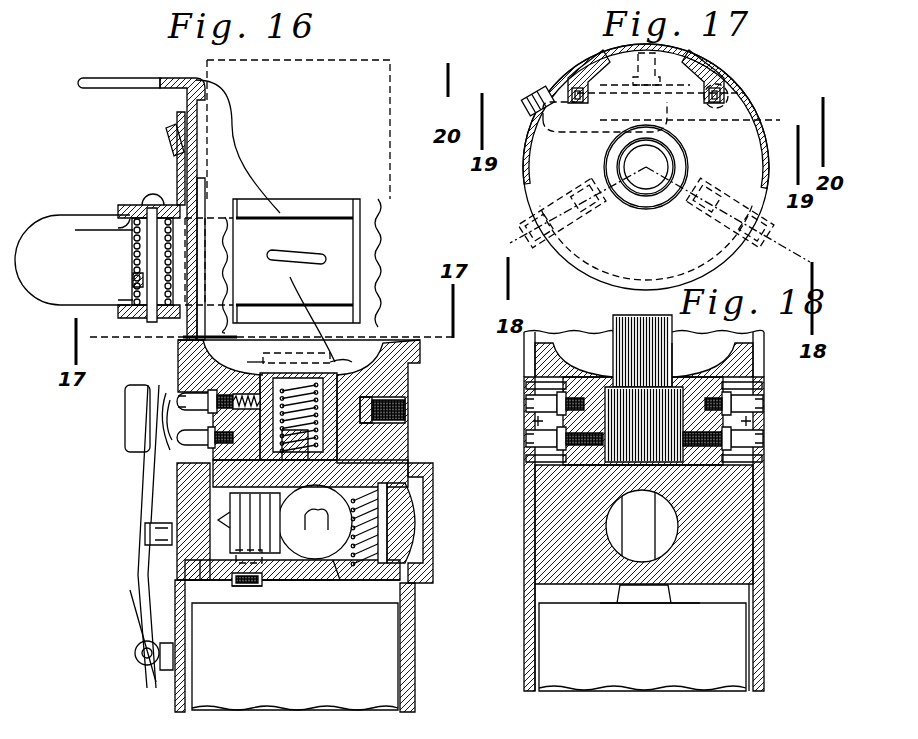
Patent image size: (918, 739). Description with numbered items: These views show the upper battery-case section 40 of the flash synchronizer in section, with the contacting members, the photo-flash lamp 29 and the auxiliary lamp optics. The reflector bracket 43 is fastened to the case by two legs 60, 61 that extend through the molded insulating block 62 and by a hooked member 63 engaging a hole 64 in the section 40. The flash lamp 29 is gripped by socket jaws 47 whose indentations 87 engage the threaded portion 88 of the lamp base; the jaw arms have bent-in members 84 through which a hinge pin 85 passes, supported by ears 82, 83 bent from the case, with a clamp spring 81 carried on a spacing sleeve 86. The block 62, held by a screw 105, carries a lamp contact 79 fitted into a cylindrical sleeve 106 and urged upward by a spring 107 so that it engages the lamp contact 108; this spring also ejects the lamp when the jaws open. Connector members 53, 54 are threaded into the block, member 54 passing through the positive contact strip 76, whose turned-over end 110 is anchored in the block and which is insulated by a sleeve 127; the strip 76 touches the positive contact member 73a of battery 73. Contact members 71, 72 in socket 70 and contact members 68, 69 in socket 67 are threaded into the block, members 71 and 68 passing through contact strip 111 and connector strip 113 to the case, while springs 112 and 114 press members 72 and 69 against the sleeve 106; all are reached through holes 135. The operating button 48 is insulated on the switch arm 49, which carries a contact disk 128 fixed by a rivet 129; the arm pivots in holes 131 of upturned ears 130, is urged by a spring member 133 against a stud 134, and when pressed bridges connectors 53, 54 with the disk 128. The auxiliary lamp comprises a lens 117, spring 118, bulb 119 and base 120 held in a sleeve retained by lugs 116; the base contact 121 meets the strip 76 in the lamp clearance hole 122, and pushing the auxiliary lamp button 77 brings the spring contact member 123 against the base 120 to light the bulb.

In FIG. 16, the flash lamp 29 is at (324, 76).
In FIG. 16, the upper battery-case section 40 is at (412, 679).
In FIG. 17, the upper battery-case section 40 is at (748, 90).
In FIG. 18, the upper battery-case section 40 is at (765, 634).
In FIG. 16, the reflector bracket 43 is at (128, 78).
In FIG. 16, the socket jaws 47 is at (345, 266).
In FIG. 16, the operating button 48 is at (125, 400).
In FIG. 16, the switch arm 49 is at (141, 508).
In FIG. 16, the connector member 53 is at (198, 400).
In FIG. 17, the connector member 53 is at (690, 56).
In FIG. 16, the connector member 54 is at (190, 447).
In FIG. 16, the bracket leg 60 is at (208, 204).
In FIG. 17, the bracket leg 60 is at (726, 78).
In FIG. 17, the bracket leg 61 is at (600, 63).
In FIG. 16, the insulating block 62 is at (422, 350).
In FIG. 17, the insulating block 62 is at (598, 257).
In FIG. 18, the insulating block 62 is at (540, 550).
In FIG. 16, the hooked member 63 is at (167, 132).
In FIG. 16, the hole 64 is at (178, 160).
In FIG. 18, the socket 67 is at (752, 422).
In FIG. 17, the contact member 68 is at (762, 222).
In FIG. 18, the contact member 68 is at (765, 405).
In FIG. 18, the contact member 69 is at (765, 443).
In FIG. 18, the socket 70 is at (533, 422).
In FIG. 17, the contact member 71 is at (532, 220).
In FIG. 18, the contact member 71 is at (526, 403).
In FIG. 18, the contact member 72 is at (526, 440).
In FIG. 16, the battery 73 is at (387, 650).
In FIG. 18, the battery 73 is at (728, 656).
In FIG. 16, the positive contact member 73a is at (300, 582).
In FIG. 18, the positive contact member 73a is at (655, 604).
In FIG. 16, the positive contact strip 76 is at (225, 588).
In FIG. 18, the positive contact strip 76 is at (650, 545).
In FIG. 17, the auxiliary lamp button 77 is at (530, 111).
In FIG. 16, the lamp contact 79 is at (343, 357).
In FIG. 17, the lamp contact 79 is at (672, 162).
In FIG. 18, the lamp contact 79 is at (628, 322).
In FIG. 16, the clamp spring 81 is at (132, 247).
In FIG. 16, the ear 82 is at (132, 206).
In FIG. 16, the ear 83 is at (120, 313).
In FIG. 16, the bent-in member 84 is at (118, 222).
In FIG. 16, the hinge pin 85 is at (153, 203).
In FIG. 16, the spacing sleeve 86 is at (133, 283).
In FIG. 16, the indentation 87 is at (298, 251).
In FIG. 16, the threaded portion of lamp base 88 is at (382, 240).
In FIG. 16, the screw 105 is at (410, 406).
In FIG. 16, the cylindrical sleeve 106 is at (249, 362).
In FIG. 17, the cylindrical sleeve 106 is at (648, 200).
In FIG. 18, the cylindrical sleeve 106 is at (674, 375).
In FIG. 16, the spring 107 is at (292, 442).
In FIG. 16, the lamp contact 108 is at (298, 352).
In FIG. 16, the turned-over end 110 is at (310, 578).
In FIG. 18, the contact strip 111 is at (528, 385).
In FIG. 18, the spring 112 is at (609, 437).
In FIG. 18, the connector strip 113 is at (761, 385).
In FIG. 18, the coiled spring 114 is at (700, 438).
In FIG. 16, the lug 116 is at (412, 482).
In FIG. 16, the lens 117 is at (418, 540).
In FIG. 16, the spring 118 is at (388, 516).
In FIG. 16, the bulb 119 is at (366, 565).
In FIG. 16, the lamp base 120 is at (268, 540).
In FIG. 16, the base contact 121 is at (200, 585).
In FIG. 18, the lamp clearance hole 122 is at (614, 550).
In FIG. 16, the spring contact member 123 is at (245, 588).
In FIG. 17, the spring contact member 123 is at (593, 128).
In FIG. 16, the insulating sleeve 127 is at (262, 590).
In FIG. 16, the contact disk 128 is at (165, 448).
In FIG. 16, the rivet 129 is at (169, 433).
In FIG. 16, the upturned ear 130 is at (163, 672).
In FIG. 16, the hole 131 is at (135, 653).
In FIG. 16, the spring member 133 is at (136, 589).
In FIG. 16, the stud 134 is at (152, 543).
In FIG. 18, the hole 135 is at (530, 459).